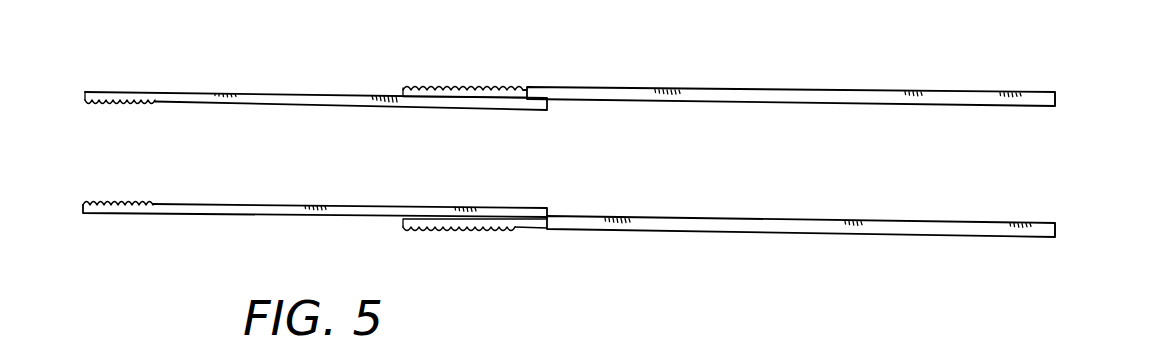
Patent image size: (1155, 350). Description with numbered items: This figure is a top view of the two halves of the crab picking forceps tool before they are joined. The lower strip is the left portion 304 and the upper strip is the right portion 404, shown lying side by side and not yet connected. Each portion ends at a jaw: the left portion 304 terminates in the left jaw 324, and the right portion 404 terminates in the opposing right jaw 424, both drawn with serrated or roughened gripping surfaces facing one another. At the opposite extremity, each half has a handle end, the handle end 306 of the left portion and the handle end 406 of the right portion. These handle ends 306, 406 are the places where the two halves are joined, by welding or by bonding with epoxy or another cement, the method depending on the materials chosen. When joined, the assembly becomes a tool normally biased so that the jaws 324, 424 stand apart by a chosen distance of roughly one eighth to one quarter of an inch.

The right jaw 424 is at (130, 92).
The right portion 404 is at (762, 91).
The handle end 406 is at (1060, 108).
The left jaw 324 is at (120, 214).
The left portion 304 is at (766, 233).
The handle end 306 is at (1056, 223).